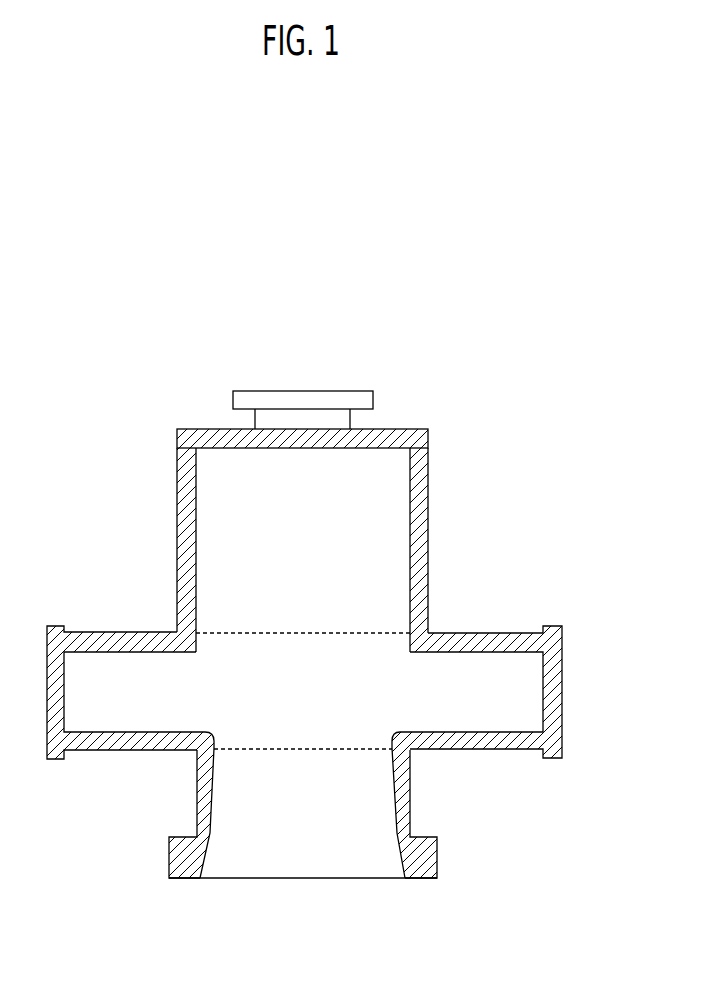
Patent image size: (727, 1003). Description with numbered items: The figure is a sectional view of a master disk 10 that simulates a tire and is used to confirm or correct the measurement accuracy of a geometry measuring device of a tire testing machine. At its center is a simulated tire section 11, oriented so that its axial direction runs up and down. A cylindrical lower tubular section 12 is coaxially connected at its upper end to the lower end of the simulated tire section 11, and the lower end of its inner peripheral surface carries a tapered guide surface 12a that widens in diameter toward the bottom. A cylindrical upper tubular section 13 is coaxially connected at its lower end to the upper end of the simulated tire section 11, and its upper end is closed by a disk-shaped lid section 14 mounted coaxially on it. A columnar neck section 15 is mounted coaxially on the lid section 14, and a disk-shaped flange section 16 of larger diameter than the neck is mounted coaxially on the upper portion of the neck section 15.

The master disk 10 is at (418, 366).
The simulated tire section 11 is at (563, 666).
The lower tubular section 12 is at (411, 790).
The guide surface 12a is at (395, 862).
The upper tubular section 13 is at (430, 513).
The lid section 14 is at (412, 428).
The neck section 15 is at (253, 419).
The flange section 16 is at (288, 390).